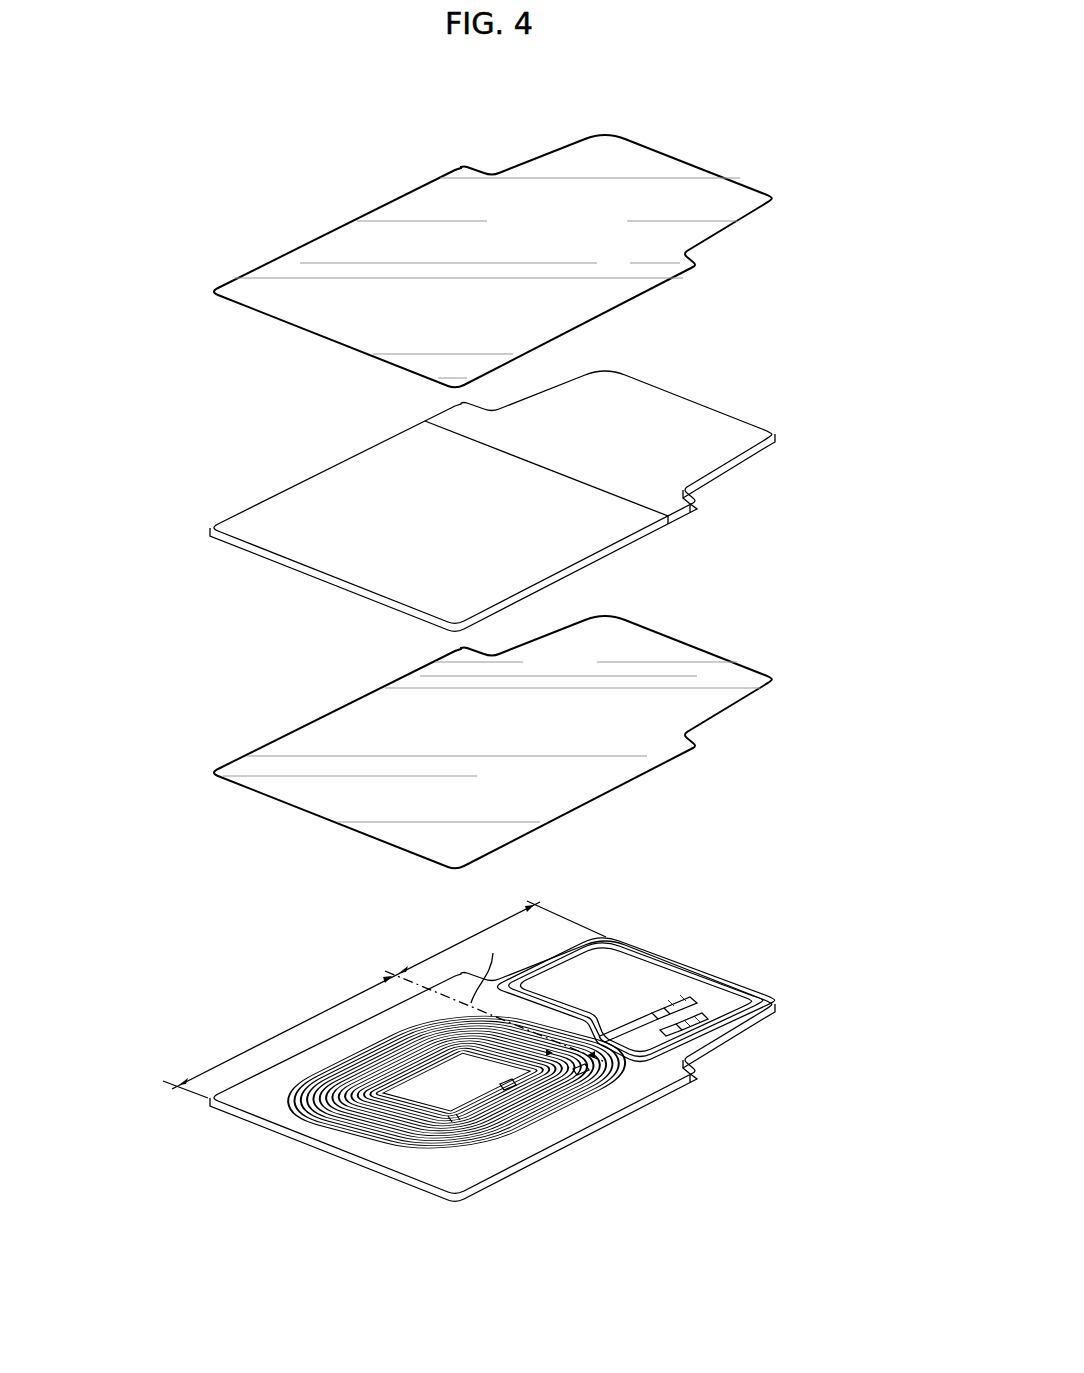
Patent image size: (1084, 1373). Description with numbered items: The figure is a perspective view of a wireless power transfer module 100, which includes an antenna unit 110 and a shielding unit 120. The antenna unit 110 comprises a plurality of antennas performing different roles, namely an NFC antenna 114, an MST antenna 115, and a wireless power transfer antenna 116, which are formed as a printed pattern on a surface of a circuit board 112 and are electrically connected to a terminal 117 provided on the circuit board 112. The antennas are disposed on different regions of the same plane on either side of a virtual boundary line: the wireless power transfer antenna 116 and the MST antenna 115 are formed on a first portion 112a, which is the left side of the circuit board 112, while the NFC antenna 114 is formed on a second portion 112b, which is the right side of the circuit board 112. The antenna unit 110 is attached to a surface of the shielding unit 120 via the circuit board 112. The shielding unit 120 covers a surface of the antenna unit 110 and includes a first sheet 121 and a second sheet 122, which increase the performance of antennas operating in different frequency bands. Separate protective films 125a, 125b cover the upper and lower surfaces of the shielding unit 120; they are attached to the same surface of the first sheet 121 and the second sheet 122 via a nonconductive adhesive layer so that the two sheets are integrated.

The wireless power transfer module 100 is at (170, 663).
The antenna unit 110 is at (524, 1070).
The circuit board 112 is at (521, 1071).
The first portion 112a is at (640, 1088).
The second portion 112b is at (678, 1070).
The NFC antenna 114 is at (733, 1033).
The MST antenna 115 is at (550, 1113).
The wireless power transfer antenna 116 is at (450, 1118).
The terminal 117 is at (703, 998).
The shielding unit 120 is at (518, 501).
The first sheet 121 is at (608, 532).
The second sheet 122 is at (713, 463).
The protective film 125a is at (690, 234).
The protective film 125b is at (687, 648).